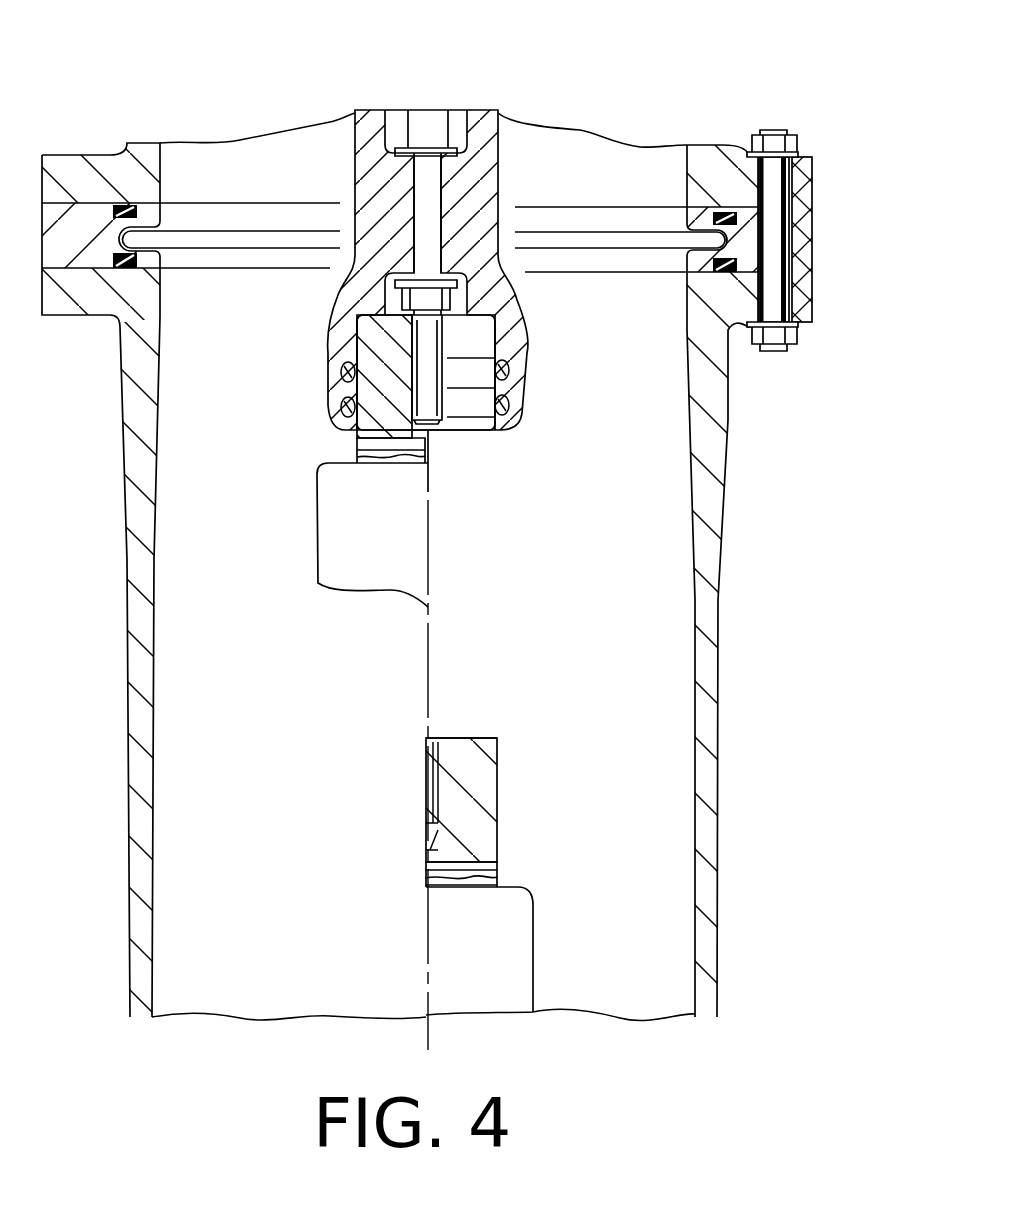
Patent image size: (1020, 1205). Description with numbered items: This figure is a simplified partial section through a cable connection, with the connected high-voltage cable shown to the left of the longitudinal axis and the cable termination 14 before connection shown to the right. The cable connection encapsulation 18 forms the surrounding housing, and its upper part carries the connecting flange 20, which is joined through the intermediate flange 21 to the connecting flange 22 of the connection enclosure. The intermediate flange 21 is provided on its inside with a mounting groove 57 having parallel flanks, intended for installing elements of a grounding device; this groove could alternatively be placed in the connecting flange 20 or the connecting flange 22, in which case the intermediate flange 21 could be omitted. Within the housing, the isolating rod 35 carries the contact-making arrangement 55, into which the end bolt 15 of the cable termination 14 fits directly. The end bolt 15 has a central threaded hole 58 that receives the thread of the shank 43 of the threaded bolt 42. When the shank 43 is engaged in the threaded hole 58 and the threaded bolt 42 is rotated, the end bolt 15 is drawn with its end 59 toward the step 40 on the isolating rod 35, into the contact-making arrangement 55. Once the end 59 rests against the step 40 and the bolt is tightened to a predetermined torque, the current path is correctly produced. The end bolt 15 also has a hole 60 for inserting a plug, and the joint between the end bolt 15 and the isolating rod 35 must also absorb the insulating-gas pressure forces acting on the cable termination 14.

The cable termination 14 is at (505, 992).
The end bolt 15 is at (467, 806).
The cable connection encapsulation 18 is at (705, 639).
The connecting flange 20 is at (802, 302).
The intermediate flange 21 is at (802, 232).
The connecting flange 22 is at (800, 177).
The isolating rod 35 is at (473, 200).
The step 40 is at (478, 322).
The threaded bolt 42 is at (417, 133).
The shank 43 is at (430, 397).
The contact-making arrangement 55 is at (512, 370).
The mounting groove 57 is at (293, 242).
The threaded hole 58 is at (429, 775).
The end 59 is at (468, 740).
The hole 60 is at (473, 867).